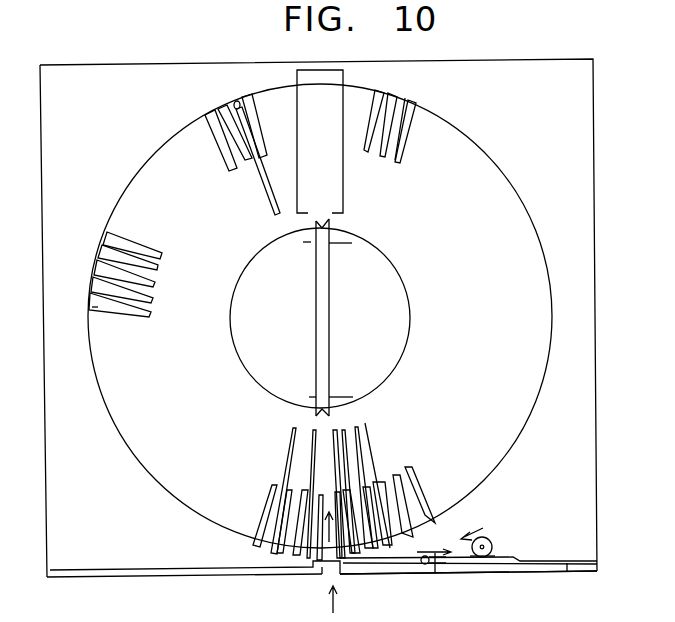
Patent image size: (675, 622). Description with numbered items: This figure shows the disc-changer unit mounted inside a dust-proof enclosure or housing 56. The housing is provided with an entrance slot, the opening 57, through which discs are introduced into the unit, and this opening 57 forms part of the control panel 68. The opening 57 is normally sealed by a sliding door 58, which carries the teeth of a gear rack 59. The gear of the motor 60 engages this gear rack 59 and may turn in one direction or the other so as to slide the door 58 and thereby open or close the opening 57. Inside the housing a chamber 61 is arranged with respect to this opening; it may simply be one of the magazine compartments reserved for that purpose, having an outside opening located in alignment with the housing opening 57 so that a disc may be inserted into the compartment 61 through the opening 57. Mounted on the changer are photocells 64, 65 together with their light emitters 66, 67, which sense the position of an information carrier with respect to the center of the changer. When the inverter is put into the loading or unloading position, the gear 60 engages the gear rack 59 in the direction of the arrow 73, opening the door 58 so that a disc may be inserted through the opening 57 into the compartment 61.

The housing 56 is at (582, 199).
The opening 57 is at (332, 571).
The sliding door 58 is at (390, 567).
The gear rack 59 is at (467, 563).
The motor gear 60 is at (511, 534).
The chamber 61 is at (323, 460).
The photocell 64 is at (345, 240).
The photocell 65 is at (348, 394).
The light emitter 66 is at (310, 243).
The light emitter 67 is at (310, 397).
The control panel 68 is at (568, 571).
The arrow 73 is at (432, 565).